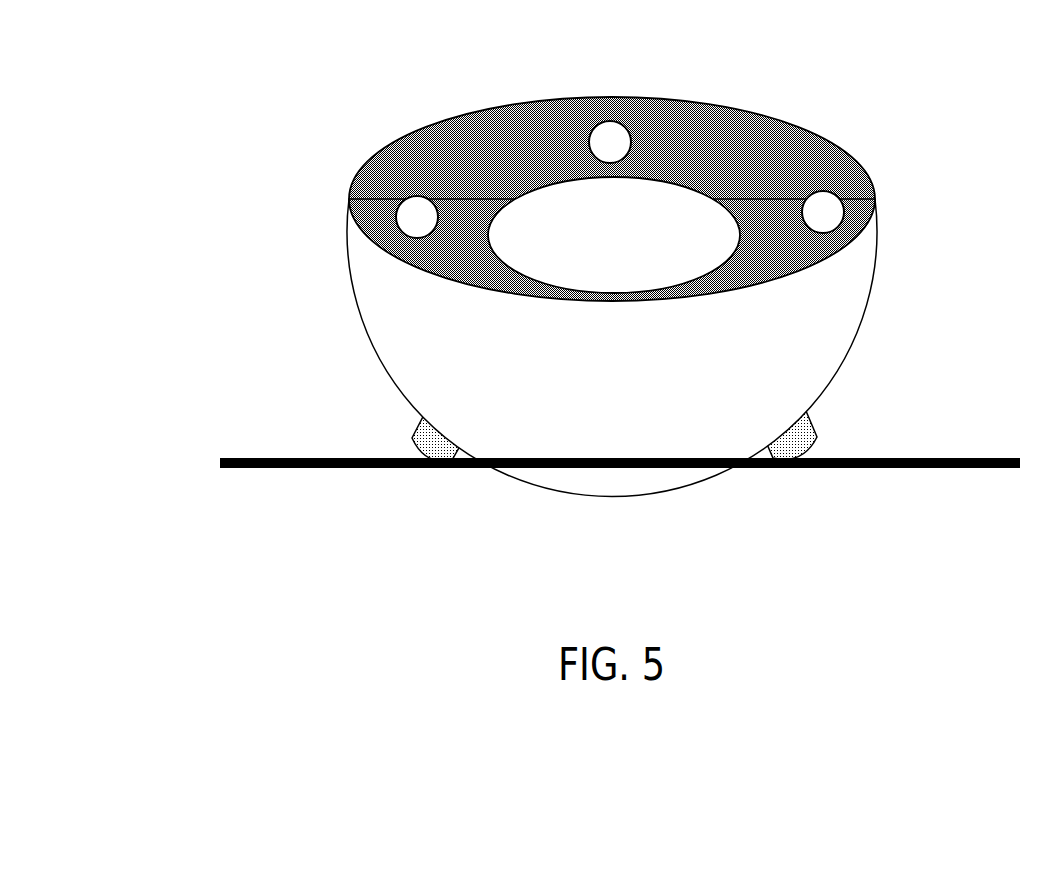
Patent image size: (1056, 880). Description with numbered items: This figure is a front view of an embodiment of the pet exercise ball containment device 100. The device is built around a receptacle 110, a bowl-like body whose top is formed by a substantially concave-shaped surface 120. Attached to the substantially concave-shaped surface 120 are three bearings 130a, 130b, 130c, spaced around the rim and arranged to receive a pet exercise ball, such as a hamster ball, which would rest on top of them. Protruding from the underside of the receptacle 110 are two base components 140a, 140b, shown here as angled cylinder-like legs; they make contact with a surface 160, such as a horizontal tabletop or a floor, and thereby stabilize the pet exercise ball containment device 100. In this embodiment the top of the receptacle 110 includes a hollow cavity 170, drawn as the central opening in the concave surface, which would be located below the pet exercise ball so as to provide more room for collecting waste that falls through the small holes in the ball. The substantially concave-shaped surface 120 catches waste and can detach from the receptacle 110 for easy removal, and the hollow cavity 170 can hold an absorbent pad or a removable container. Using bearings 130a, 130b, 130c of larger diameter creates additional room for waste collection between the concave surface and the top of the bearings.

The pet exercise ball containment device 100 is at (586, 293).
The receptacle 110 is at (802, 325).
The substantially concave-shaped surface 120 is at (770, 150).
The bearing 130a is at (412, 217).
The bearing 130b is at (828, 212).
The bearing 130c is at (602, 140).
The base component 140a is at (427, 423).
The base component 140b is at (792, 420).
The surface 160 is at (297, 472).
The hollow cavity 170 is at (517, 247).